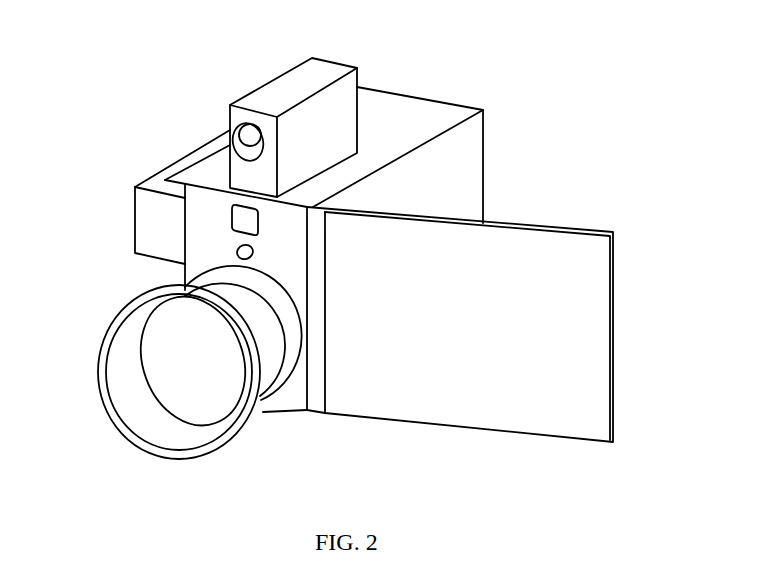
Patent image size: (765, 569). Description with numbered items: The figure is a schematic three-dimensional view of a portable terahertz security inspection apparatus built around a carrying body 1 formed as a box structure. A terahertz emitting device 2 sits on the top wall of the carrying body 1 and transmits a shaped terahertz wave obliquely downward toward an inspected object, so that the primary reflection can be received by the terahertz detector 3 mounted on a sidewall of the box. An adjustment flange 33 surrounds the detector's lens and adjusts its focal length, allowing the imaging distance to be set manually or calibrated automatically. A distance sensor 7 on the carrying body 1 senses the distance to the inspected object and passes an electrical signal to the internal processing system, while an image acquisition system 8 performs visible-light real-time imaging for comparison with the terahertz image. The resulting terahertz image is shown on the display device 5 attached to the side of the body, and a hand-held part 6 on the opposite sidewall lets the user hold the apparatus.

The carrying body 1 is at (398, 108).
The terahertz emitting device 2 is at (304, 81).
The terahertz detector 3 is at (141, 386).
The adjustment flange 33 is at (280, 377).
The display device 5 is at (414, 390).
The hand-held part 6 is at (161, 164).
The distance sensor 7 is at (241, 221).
The image acquisition system 8 is at (237, 257).